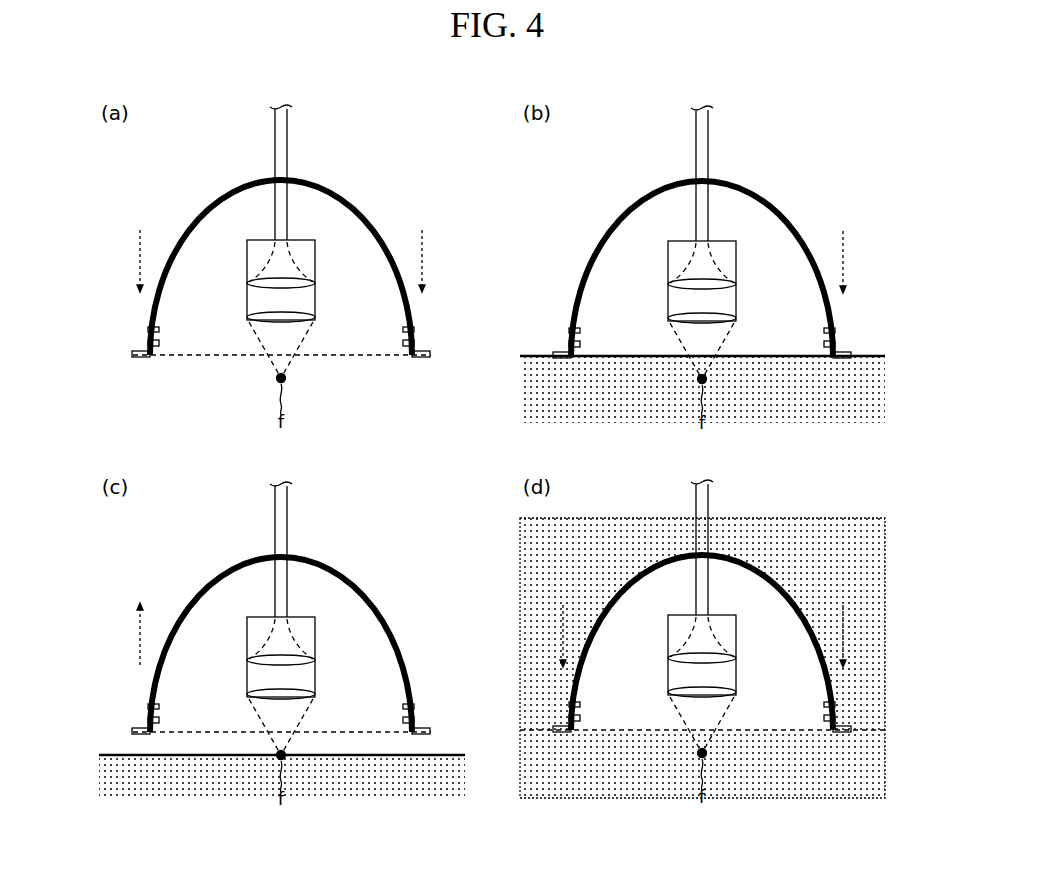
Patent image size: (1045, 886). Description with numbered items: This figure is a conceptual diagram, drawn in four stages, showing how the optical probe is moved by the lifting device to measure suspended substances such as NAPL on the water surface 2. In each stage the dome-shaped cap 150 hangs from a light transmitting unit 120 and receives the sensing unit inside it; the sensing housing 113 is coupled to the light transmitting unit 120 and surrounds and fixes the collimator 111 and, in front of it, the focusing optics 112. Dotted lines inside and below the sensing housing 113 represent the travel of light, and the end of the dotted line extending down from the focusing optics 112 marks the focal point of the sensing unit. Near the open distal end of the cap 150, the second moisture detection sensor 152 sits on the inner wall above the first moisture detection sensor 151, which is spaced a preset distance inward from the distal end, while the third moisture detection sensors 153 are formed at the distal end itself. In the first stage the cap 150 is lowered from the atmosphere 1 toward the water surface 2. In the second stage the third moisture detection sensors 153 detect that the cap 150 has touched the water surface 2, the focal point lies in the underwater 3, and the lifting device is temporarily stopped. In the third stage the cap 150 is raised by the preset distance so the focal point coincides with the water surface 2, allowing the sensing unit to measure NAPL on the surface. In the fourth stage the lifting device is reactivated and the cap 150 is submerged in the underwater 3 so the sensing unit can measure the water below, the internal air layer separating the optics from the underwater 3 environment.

The atmosphere 1 is at (130, 191).
The water surface 2 is at (528, 356).
The underwater 3 is at (852, 398).
The collimator 111 is at (314, 284).
The focusing optics 112 is at (314, 317).
The sensing housing 113 is at (316, 244).
The light transmitting unit 120 is at (275, 150).
The cap 150 is at (210, 203).
The first moisture detection sensor 151 is at (148, 343).
The second moisture detection sensor 152 is at (148, 329).
The third moisture detection sensor 153 is at (132, 354).